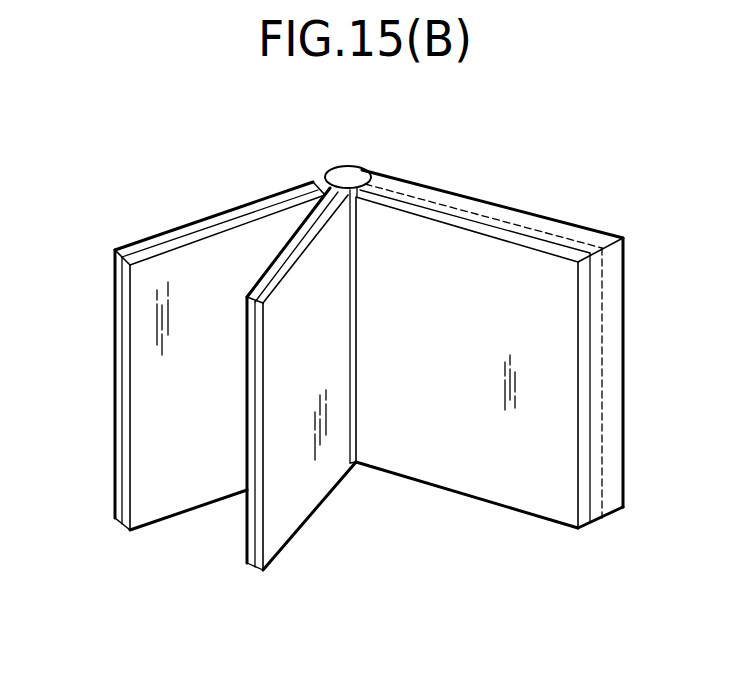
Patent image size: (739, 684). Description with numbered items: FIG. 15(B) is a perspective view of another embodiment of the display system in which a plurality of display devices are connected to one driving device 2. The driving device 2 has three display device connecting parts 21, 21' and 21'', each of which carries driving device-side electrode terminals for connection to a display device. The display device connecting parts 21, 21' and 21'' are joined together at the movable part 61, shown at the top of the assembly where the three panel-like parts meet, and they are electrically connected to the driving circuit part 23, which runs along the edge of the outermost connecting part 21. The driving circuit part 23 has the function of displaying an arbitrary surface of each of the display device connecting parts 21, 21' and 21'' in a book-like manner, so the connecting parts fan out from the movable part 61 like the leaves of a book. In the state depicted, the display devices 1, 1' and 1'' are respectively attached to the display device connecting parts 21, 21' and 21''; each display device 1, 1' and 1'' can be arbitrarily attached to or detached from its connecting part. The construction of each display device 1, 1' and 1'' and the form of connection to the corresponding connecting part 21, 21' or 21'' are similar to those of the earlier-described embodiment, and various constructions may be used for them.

The display device 1 is at (472, 392).
The display device connecting part 21 is at (514, 363).
The driving circuit part 23 is at (562, 231).
The display device 1' is at (278, 404).
The display device connecting part 21' is at (287, 416).
The display device 1'' is at (187, 365).
The display device connecting part 21'' is at (211, 391).
The movable part 61 is at (327, 170).
The driving device 2 is at (462, 165).